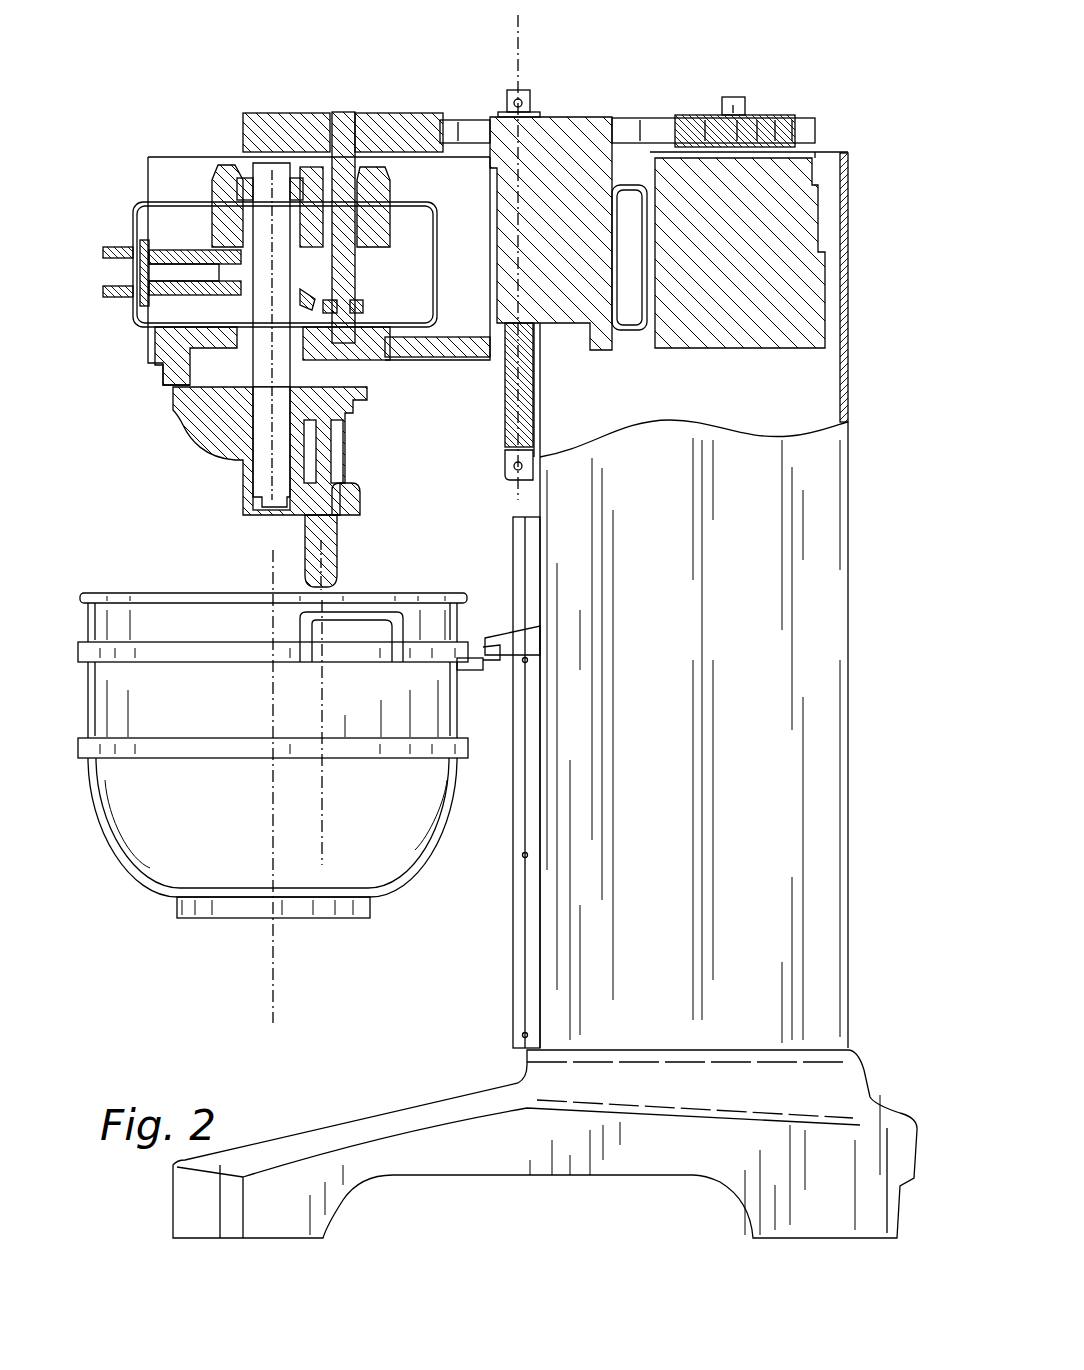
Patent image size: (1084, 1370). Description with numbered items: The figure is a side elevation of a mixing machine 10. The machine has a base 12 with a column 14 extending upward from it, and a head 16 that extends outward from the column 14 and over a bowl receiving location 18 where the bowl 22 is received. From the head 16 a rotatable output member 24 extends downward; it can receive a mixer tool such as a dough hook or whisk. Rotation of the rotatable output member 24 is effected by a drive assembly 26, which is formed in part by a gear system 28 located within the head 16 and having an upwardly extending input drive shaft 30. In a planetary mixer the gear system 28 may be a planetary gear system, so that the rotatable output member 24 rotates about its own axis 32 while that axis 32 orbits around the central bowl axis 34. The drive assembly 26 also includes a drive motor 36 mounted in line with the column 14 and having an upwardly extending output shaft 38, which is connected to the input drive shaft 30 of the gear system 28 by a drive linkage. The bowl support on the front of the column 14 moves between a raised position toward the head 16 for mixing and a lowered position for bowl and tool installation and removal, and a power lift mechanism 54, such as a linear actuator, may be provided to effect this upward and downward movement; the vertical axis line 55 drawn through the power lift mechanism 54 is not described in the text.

The stand mixer 10 is at (797, 68).
The base 12 is at (433, 1103).
The column 14 is at (777, 897).
The mixer head housing 16 is at (138, 162).
The mixing bowl 18 is at (137, 581).
The bowl body 22 is at (157, 847).
The agitator shaft 24 is at (338, 551).
The drive block 26 is at (572, 81).
The planetary gear assembly 28 is at (433, 181).
The drive shaft 30 is at (346, 112).
The bowl handle 32 is at (323, 807).
The bowl axis 34 is at (273, 963).
The motor 36 is at (743, 275).
The mounting plate 38 is at (724, 107).
The lift rod 54 is at (497, 262).
The rod axis 55 is at (522, 32).